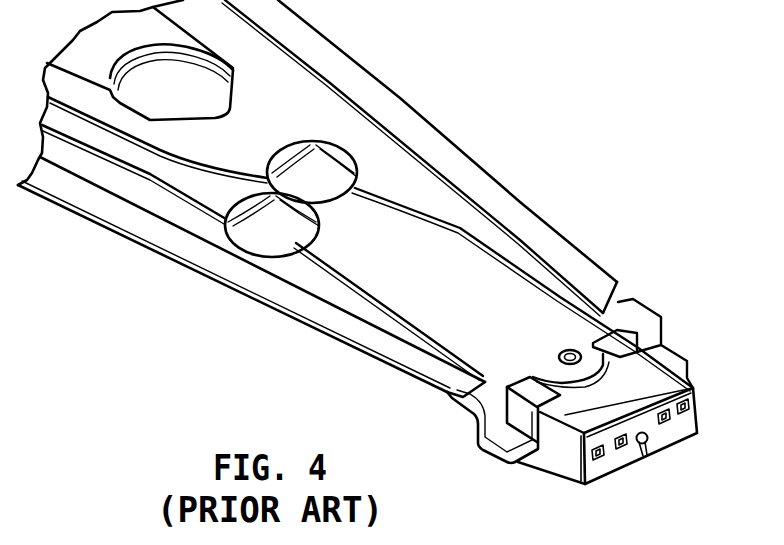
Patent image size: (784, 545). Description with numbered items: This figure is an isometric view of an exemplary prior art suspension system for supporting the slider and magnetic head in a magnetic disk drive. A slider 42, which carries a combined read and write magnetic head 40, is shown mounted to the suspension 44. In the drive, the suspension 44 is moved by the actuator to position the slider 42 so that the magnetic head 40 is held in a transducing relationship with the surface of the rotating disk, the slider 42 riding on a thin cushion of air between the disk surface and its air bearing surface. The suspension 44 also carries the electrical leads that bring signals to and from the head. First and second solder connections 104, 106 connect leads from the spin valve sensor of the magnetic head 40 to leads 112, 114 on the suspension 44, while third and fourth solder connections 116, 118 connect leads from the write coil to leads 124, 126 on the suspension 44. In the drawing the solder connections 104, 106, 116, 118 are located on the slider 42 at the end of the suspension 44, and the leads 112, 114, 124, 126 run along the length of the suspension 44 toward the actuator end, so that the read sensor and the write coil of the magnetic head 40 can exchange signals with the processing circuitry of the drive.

The suspension 44 is at (463, 151).
The lead 114 is at (540, 257).
The lead 126 is at (440, 230).
The lead 124 is at (368, 280).
The lead 112 is at (340, 292).
The magnetic head 40 is at (645, 455).
The slider 42 is at (534, 469).
The first solder connection 104 is at (585, 478).
The third solder connection 116 is at (616, 459).
The second solder connection 106 is at (684, 403).
The fourth solder connection 118 is at (667, 424).